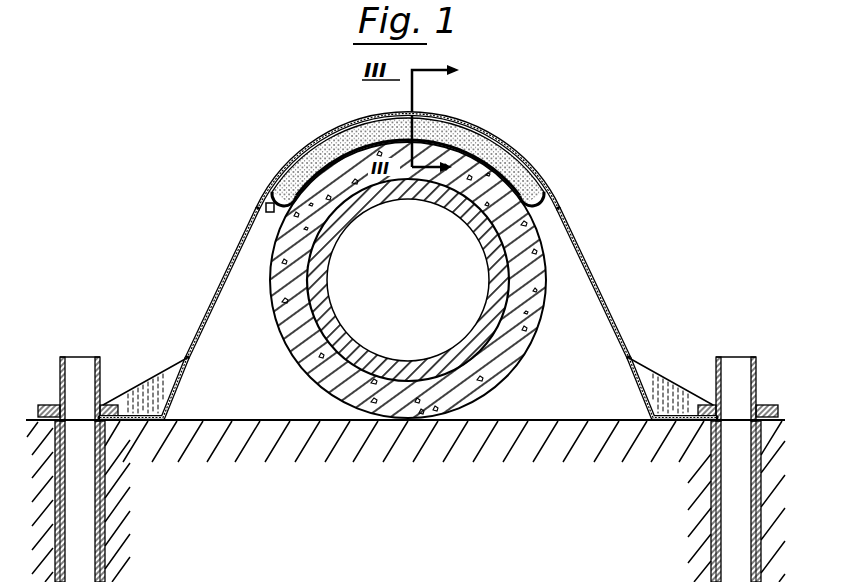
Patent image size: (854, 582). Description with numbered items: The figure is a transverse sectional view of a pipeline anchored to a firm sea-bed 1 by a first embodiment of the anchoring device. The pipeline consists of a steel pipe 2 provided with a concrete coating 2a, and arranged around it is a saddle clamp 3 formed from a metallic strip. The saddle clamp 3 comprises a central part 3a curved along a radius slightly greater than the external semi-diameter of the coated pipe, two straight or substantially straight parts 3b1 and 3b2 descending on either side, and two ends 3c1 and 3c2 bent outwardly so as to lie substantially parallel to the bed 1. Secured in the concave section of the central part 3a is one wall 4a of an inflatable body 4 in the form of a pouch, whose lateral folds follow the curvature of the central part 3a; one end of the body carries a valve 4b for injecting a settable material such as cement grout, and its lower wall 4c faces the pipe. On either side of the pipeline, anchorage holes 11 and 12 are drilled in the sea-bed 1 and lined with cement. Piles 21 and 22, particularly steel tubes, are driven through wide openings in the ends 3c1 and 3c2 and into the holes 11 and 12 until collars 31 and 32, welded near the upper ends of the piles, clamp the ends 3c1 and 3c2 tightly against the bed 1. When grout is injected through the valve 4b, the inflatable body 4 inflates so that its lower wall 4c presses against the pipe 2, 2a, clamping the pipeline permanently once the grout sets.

The sea-bed 1 is at (587, 420).
The pipe 2 is at (347, 212).
The concrete coating 2a is at (512, 363).
The saddle clamp 3 is at (408, 253).
The central part 3a is at (473, 127).
The straight part 3b1 is at (603, 303).
The straight part 3b2 is at (220, 292).
The end 3c1 is at (677, 417).
The end 3c2 is at (148, 415).
The inflatable body 4 is at (379, 144).
The wall 4a is at (510, 150).
The valve 4b is at (264, 201).
The lower wall 4c is at (303, 150).
The anchorage hole 11 is at (713, 480).
The anchorage hole 12 is at (103, 495).
The pile 21 is at (697, 435).
The pile 22 is at (125, 429).
The collar 31 is at (772, 404).
The collar 32 is at (44, 405).